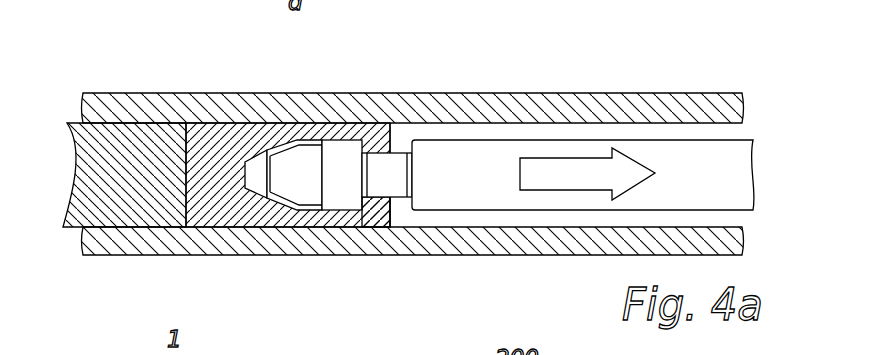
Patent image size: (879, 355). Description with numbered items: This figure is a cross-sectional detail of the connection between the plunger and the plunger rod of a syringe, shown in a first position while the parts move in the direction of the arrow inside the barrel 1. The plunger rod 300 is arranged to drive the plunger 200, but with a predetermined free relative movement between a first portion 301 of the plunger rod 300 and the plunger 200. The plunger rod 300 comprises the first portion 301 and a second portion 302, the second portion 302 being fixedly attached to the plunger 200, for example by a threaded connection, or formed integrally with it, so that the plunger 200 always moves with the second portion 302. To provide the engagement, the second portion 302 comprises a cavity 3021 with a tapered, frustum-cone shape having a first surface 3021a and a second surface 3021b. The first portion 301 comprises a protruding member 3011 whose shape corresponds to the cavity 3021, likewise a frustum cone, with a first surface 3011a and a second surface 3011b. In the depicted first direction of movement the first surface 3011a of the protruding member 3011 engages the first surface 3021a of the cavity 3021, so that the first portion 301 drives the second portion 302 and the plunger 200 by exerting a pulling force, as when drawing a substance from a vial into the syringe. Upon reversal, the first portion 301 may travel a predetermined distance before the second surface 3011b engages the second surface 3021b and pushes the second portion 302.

The barrel 1 is at (202, 93).
The plunger 200 is at (107, 210).
The plunger rod 300 is at (483, 138).
The first portion of the plunger rod 301 is at (610, 210).
The second portion of the plunger rod 302 is at (313, 228).
The protruding member 3011 is at (340, 140).
The first surface of the protruding member 3011a is at (270, 148).
The second surface of the protruding member 3011b is at (370, 213).
The cavity 3021 is at (262, 200).
The first surface of the cavity 3021a is at (218, 195).
The second surface of the cavity 3021b is at (402, 213).